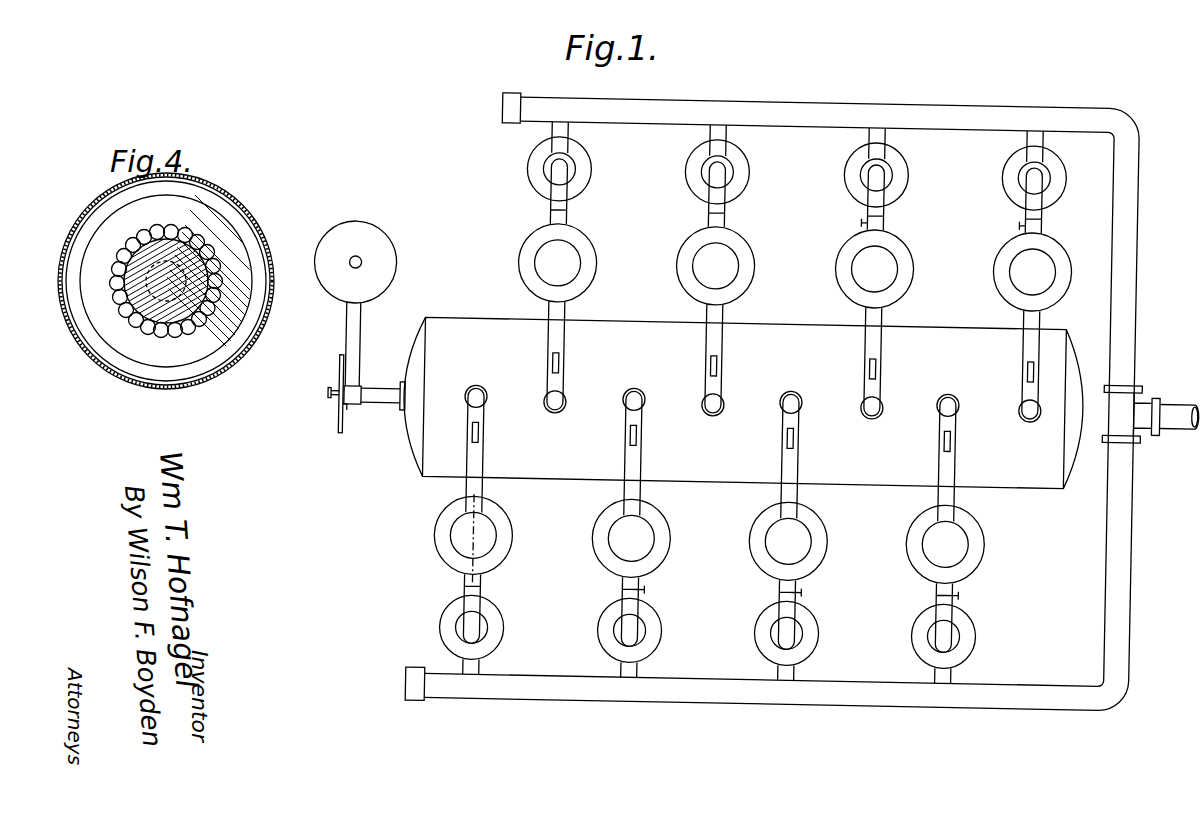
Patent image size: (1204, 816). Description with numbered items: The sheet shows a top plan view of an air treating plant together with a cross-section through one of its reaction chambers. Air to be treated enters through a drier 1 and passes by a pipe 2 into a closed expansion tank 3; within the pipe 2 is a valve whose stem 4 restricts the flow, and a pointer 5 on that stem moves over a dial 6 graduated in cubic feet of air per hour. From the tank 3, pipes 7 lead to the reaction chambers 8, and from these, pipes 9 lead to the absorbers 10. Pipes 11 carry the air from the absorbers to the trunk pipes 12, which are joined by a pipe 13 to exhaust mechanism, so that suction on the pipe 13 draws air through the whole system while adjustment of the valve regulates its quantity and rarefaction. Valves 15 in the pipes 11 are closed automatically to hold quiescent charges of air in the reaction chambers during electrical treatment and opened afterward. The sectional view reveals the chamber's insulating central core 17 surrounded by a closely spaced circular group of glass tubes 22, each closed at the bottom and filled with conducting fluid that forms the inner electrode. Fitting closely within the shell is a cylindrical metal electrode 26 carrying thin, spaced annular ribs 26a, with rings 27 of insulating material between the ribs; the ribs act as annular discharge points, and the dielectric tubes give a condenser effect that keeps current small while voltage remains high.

In FIG. 1, the drier 1 is at (390, 253).
In FIG. 1, the pipe 2 is at (360, 364).
In FIG. 1, the expansion tank 3 is at (462, 668).
In FIG. 1, the valve stem 4 is at (327, 402).
In FIG. 1, the pointer 5 is at (338, 430).
In FIG. 1, the dial 6 is at (344, 432).
In FIG. 1, the pipes 7 is at (486, 408).
In FIG. 4, the reaction chambers 8 is at (258, 233).
In FIG. 1, the reaction chambers 8 is at (674, 265).
In FIG. 1, the pipes 9 is at (705, 208).
In FIG. 1, the absorbers 10 is at (681, 178).
In FIG. 1, the pipes 11 is at (705, 135).
In FIG. 1, the trunk pipes 12 is at (820, 113).
In FIG. 1, the pipe 13 is at (1172, 402).
In FIG. 1, the valves 15 is at (858, 221).
In FIG. 4, the central core 17 is at (200, 303).
In FIG. 4, the glass tubes 22 is at (166, 269).
In FIG. 4, the cylindrical metal electrode 26 is at (268, 311).
In FIG. 4, the annular ribs 26a is at (86, 200).
In FIG. 4, the rings of insulating material 27 is at (238, 213).